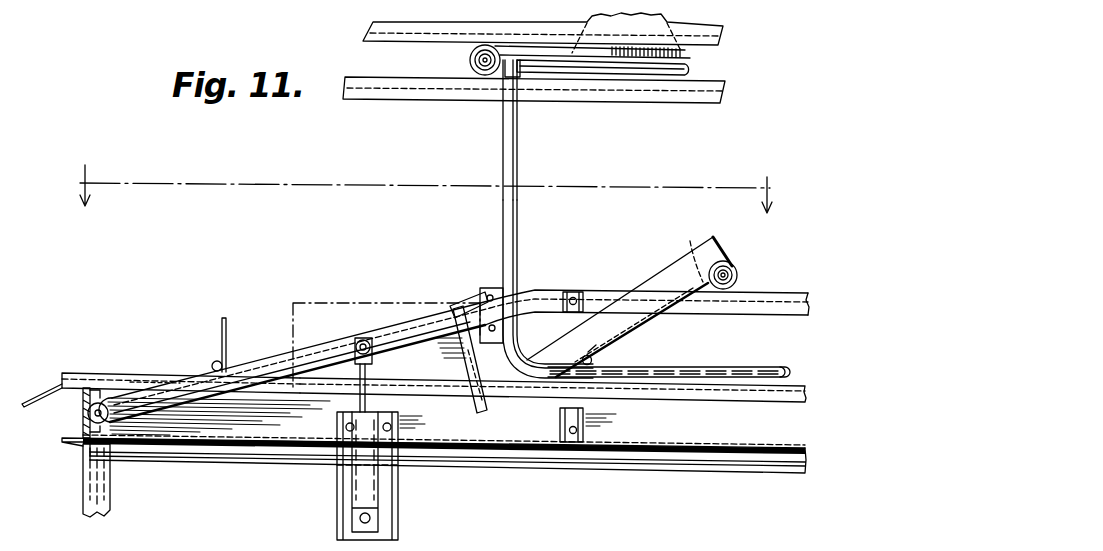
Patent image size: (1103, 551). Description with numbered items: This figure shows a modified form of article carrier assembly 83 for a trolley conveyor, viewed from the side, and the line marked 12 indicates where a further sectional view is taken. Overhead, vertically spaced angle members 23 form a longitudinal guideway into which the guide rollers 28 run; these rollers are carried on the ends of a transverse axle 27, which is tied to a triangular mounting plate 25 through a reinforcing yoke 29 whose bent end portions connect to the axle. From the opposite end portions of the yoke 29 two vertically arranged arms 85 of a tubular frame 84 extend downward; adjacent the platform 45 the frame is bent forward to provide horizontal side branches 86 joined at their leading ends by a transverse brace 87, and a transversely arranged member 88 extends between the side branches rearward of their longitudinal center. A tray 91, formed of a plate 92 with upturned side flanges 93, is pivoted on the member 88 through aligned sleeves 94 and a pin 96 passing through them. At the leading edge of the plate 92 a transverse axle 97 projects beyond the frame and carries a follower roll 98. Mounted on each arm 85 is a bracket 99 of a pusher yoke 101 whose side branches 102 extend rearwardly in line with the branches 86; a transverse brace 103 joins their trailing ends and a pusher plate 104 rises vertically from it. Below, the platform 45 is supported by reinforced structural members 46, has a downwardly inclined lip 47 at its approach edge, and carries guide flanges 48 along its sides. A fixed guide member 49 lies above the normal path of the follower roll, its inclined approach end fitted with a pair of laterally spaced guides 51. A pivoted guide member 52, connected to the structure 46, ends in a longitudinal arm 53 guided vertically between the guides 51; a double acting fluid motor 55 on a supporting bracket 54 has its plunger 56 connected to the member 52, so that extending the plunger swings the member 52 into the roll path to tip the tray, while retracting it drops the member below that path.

The section line 12- 12 is at (424, 189).
The angle members 23 is at (722, 27).
The triangular mounting plate 25 is at (688, 51).
The axle 27 is at (485, 67).
The guide rollers 28 is at (469, 61).
The reinforcing yoke 29 is at (648, 70).
The platform 45 is at (131, 381).
The structural members 46 is at (110, 497).
The downwardly inclined lip 47 is at (36, 402).
The guide flanges 48 is at (97, 374).
The guide member 49 is at (574, 292).
The guides 51 is at (486, 406).
The guide member 52 is at (316, 348).
The arm 53 is at (444, 362).
The supporting bracket 54 is at (337, 489).
The double acting fluid motor 55 is at (384, 498).
The plunger 56 is at (358, 399).
The modified carrier assembly 83 is at (528, 159).
The tubular frame 84 is at (679, 361).
The vertically arranged arms 85 is at (518, 233).
The side branches 86 is at (643, 369).
The brace 87 is at (776, 366).
The transversely arranged member 88 is at (599, 370).
The tray 91 is at (671, 259).
The plate 92 is at (696, 250).
The upturned side flanges 93 is at (649, 283).
The sleeves 94 is at (590, 353).
The pin 96 is at (585, 357).
The axle 97 is at (737, 275).
The follower roll 98 is at (734, 264).
The bracket 99 is at (481, 297).
The pusher yoke 101 is at (395, 352).
The side branches 102 is at (458, 376).
The brace 103 is at (215, 361).
The pusher plate 104 is at (227, 329).